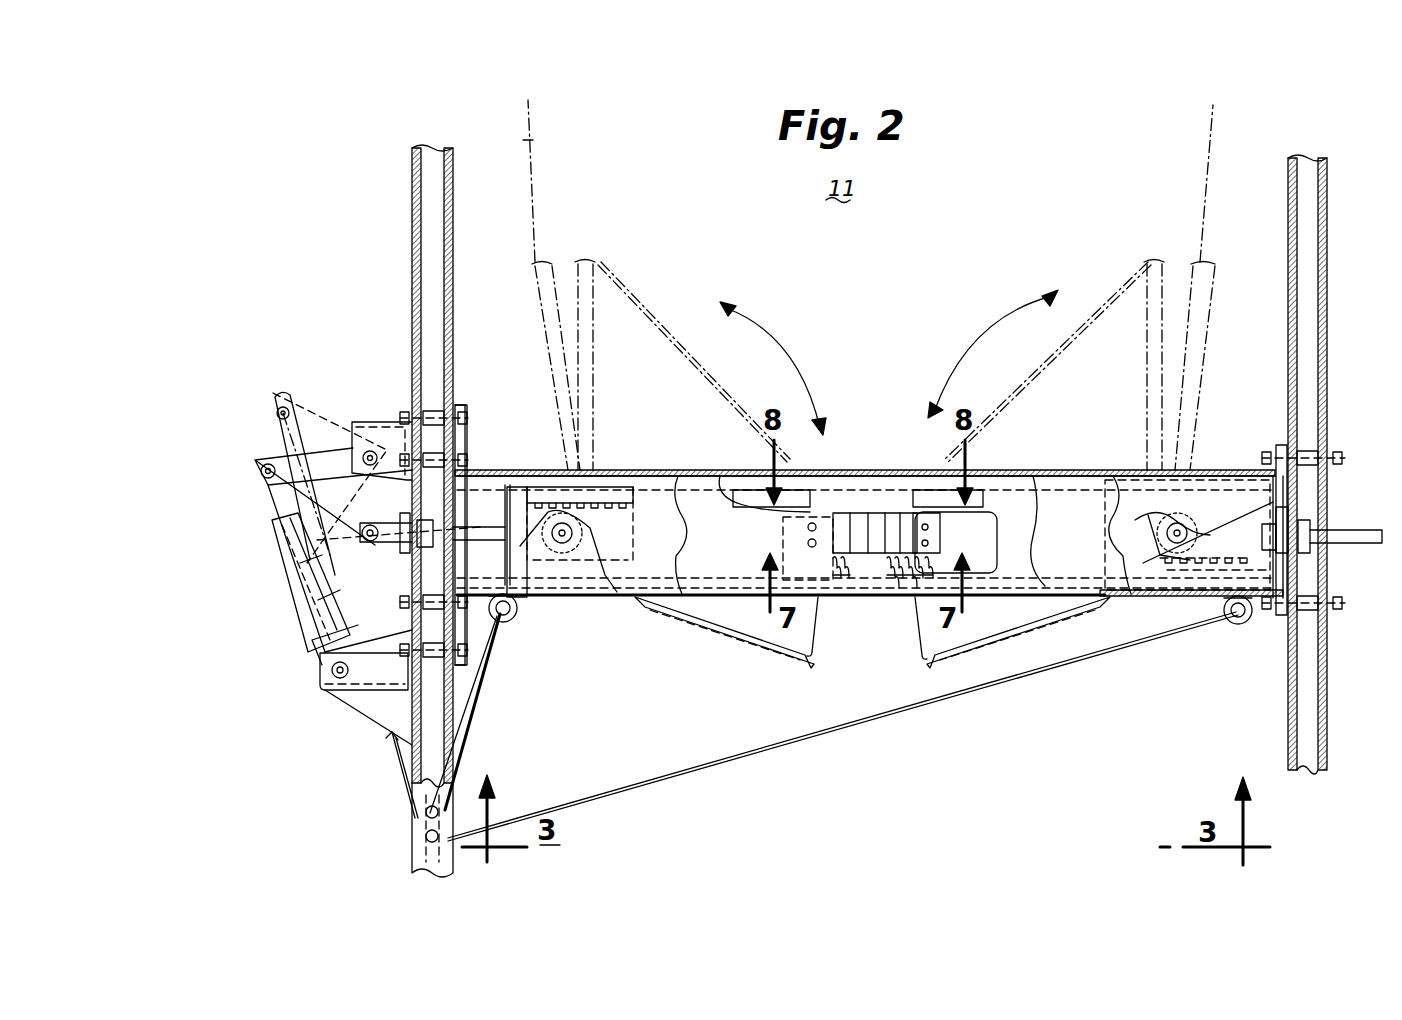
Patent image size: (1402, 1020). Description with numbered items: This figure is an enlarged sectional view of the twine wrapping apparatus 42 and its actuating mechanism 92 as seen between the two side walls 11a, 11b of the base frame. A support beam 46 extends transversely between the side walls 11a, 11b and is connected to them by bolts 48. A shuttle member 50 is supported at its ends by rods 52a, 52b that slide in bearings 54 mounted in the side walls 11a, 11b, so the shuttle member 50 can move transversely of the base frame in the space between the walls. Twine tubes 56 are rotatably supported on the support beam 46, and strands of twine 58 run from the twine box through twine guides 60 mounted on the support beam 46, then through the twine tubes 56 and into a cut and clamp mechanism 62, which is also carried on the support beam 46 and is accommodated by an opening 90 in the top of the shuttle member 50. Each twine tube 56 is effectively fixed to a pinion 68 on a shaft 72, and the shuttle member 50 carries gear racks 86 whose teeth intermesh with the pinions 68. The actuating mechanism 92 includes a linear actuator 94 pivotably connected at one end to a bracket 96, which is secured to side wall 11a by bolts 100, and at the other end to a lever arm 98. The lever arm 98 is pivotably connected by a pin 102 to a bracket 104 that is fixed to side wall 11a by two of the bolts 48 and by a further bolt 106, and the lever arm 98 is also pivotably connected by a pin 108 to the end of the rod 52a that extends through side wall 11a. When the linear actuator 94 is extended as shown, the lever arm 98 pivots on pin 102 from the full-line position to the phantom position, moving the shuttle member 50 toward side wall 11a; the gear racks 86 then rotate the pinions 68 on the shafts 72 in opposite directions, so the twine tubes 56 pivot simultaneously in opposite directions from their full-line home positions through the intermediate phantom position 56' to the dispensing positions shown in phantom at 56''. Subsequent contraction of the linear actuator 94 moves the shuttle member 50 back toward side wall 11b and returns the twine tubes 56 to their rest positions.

The side wall 11a is at (412, 206).
The side wall 11b is at (1327, 207).
The twine wrapping apparatus 42 is at (995, 740).
The support beam 46 is at (484, 472).
The bolts 48 is at (460, 441).
The shuttle member 50 is at (674, 494).
The rod 52a is at (500, 516).
The rod 52b is at (1376, 536).
The bearings 54 is at (430, 555).
The twine tubes 56 is at (872, 634).
The twine tubes 56' is at (869, 345).
The twine tubes in dispensing position 56'' is at (883, 350).
The strands of twine 58 is at (536, 141).
The twine guides 60 is at (518, 616).
The cut and clamp mechanism 62 is at (887, 498).
The pinions 68 is at (606, 534).
The shafts 72 is at (596, 543).
The gear racks 86 is at (591, 502).
The opening 90 is at (996, 535).
The actuating mechanism 92 is at (282, 602).
The linear actuator 94 is at (272, 549).
The bracket 96 is at (325, 672).
The lever arm 98 is at (275, 392).
The bolts 100 is at (450, 640).
The pin 102 is at (353, 430).
The bracket 104 is at (370, 422).
The bolt 106 is at (456, 419).
The pin 108 is at (382, 545).